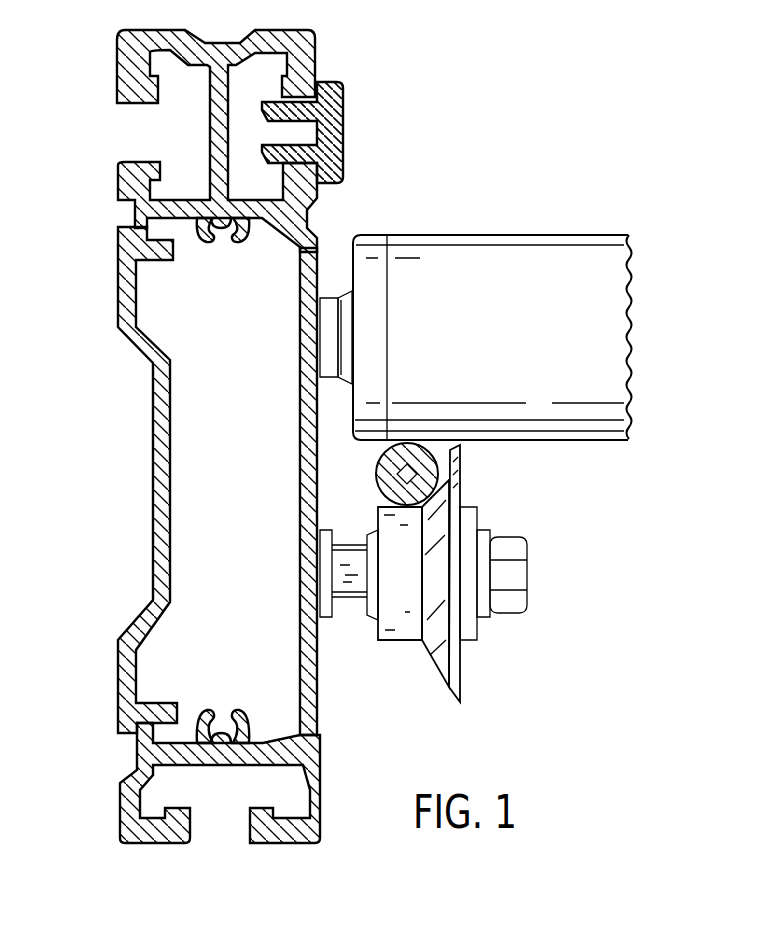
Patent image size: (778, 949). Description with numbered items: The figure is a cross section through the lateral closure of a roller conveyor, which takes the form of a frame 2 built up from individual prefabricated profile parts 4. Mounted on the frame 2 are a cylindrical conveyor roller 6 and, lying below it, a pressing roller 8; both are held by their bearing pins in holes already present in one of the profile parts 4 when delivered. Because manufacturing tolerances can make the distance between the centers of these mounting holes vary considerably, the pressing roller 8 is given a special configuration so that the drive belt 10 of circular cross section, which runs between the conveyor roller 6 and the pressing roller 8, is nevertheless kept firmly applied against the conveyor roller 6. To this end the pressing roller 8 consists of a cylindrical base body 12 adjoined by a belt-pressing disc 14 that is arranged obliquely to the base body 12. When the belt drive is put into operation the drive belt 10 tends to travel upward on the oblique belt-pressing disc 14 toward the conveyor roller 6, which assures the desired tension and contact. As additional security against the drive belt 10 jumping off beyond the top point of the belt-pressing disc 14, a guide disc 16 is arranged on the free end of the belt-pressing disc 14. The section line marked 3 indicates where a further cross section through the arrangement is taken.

The frame 2 is at (130, 498).
The section line 3- 3 is at (297, 708).
The profile parts 4 is at (323, 230).
The conveyor roller 6 is at (487, 248).
The pressing roller 8 is at (399, 658).
The drive belt 10 is at (416, 447).
The cylindrical base body 12 is at (390, 520).
The belt-pressing disc 14 is at (441, 500).
The guide disc 16 is at (462, 470).